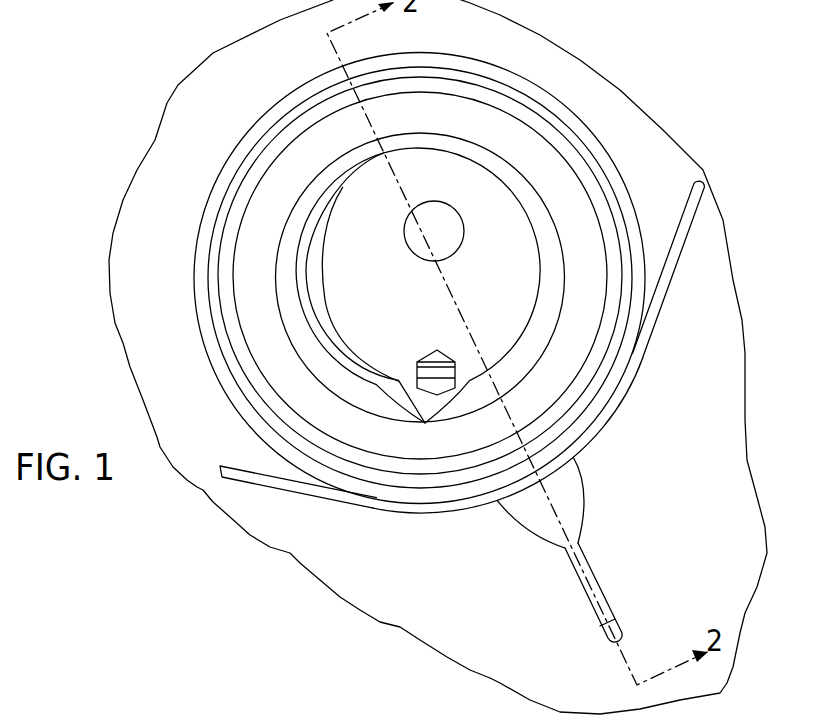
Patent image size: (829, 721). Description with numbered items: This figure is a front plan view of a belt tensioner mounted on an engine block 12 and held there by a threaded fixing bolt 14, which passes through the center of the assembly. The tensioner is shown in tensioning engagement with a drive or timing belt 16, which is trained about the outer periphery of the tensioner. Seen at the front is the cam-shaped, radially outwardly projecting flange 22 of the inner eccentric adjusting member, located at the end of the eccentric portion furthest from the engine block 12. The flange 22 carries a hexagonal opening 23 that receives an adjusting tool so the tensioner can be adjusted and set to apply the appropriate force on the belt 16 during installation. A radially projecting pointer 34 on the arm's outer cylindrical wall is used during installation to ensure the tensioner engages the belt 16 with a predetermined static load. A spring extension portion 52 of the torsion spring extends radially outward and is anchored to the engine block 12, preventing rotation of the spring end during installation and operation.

The engine block 12 is at (172, 148).
The threaded fixing bolt 14 is at (452, 232).
The drive or timing belt 16 is at (300, 488).
The flange 22 is at (528, 263).
The hexagonal opening 23 is at (447, 394).
The pointer 34 is at (568, 498).
The spring extension portion 52 is at (605, 592).